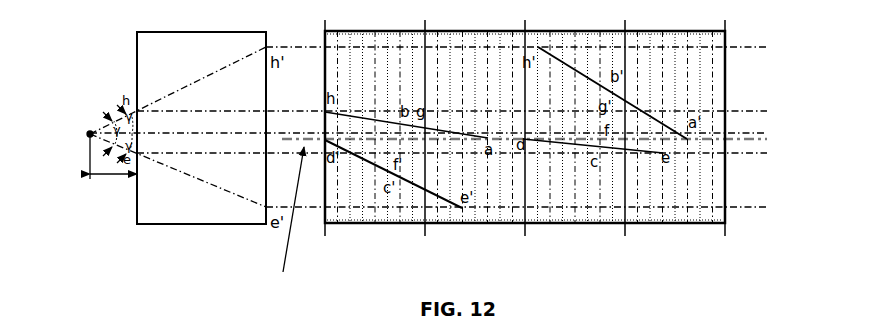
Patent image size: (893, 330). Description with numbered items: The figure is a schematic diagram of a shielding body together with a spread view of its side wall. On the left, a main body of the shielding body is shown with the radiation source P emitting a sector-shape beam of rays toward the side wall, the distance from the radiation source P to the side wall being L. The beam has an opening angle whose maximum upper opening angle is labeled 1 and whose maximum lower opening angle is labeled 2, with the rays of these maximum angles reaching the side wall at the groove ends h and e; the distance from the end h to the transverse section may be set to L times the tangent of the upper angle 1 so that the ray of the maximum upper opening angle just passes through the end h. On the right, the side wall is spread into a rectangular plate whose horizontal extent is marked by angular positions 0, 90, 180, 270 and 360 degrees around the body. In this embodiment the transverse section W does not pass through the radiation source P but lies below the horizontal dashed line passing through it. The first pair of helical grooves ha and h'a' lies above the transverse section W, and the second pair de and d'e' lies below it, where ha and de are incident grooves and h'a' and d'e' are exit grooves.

The maximum upper opening angle Y1 1 is at (452, 122).
The maximum lower opening angle Y2 2 is at (452, 147).
The 0 degree angular position 0 is at (326, 141).
The 90 degree angular position 90 is at (426, 141).
The 180 degree angular position 180 is at (526, 141).
The 270 degree angular position 270 is at (626, 141).
The 360 degree angular position 360 is at (728, 141).
The radiation source P is at (80, 134).
The distance from the radiation source to the side wall L is at (113, 156).
The transverse section W' W is at (288, 223).